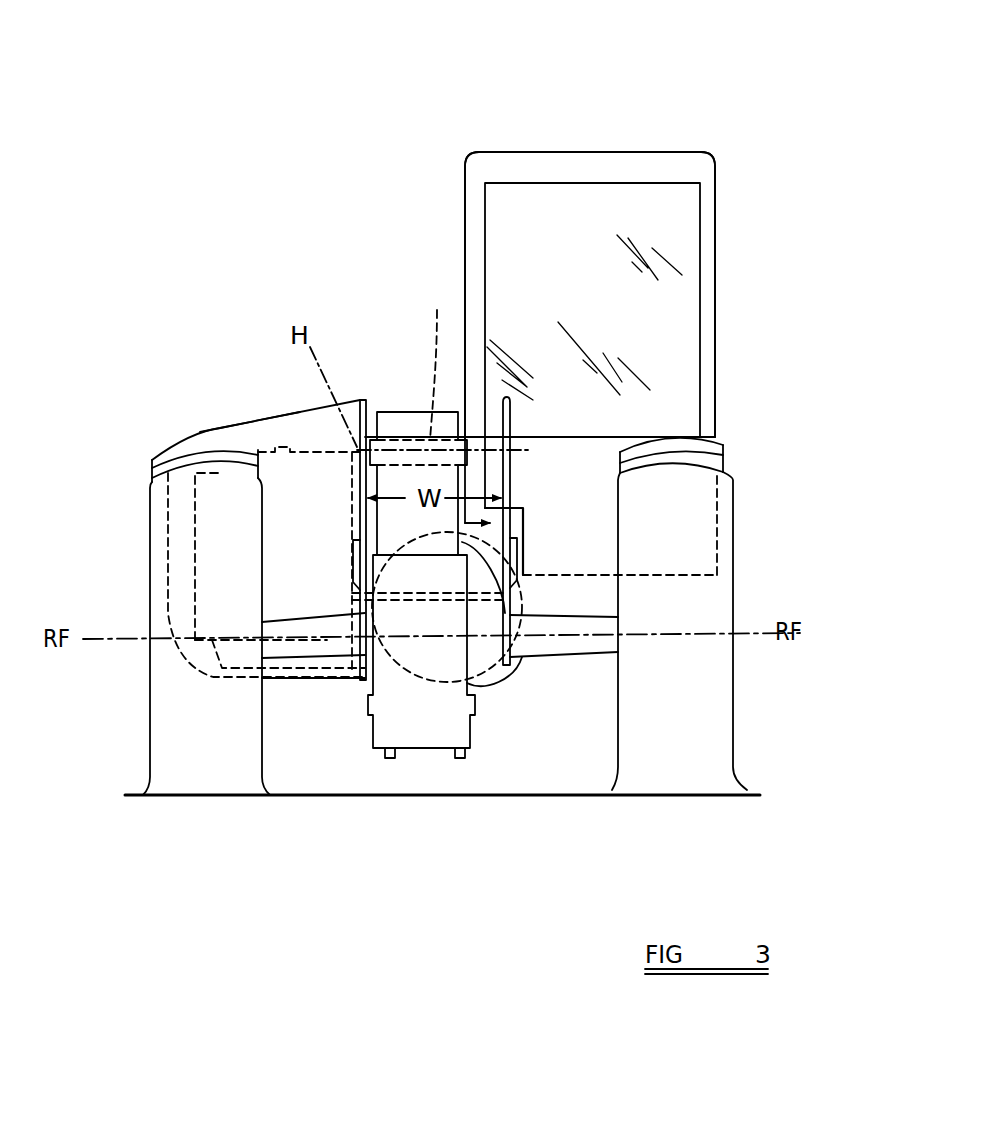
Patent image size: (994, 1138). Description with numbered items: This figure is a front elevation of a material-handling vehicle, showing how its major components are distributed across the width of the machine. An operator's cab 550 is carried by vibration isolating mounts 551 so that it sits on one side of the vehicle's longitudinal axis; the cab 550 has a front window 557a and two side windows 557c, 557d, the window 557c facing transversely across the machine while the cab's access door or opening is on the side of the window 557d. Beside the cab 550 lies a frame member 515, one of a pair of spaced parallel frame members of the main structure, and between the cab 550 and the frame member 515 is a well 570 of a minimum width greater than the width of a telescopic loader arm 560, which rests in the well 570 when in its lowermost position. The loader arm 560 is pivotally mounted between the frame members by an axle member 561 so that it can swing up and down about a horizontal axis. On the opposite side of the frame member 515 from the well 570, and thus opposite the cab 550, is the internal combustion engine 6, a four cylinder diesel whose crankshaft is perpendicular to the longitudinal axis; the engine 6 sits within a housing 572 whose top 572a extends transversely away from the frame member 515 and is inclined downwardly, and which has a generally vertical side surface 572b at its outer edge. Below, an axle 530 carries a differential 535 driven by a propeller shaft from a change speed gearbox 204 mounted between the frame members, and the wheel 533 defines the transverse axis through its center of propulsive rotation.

The operator's cab 550 is at (637, 143).
The side window 557c is at (465, 197).
The side window 557d is at (717, 178).
The front window 557a is at (683, 242).
The vibration isolating mounts 551 is at (490, 500).
The wheel 533 is at (150, 719).
The housing 572 is at (290, 414).
The top of housing 572a is at (232, 426).
The vertical side surface 572b is at (163, 525).
The internal combustion engine 6 is at (195, 565).
The frame member 515 is at (357, 400).
The loader arm 560 is at (420, 411).
The well 570 is at (393, 403).
The axle member 561 is at (439, 361).
The axle 530 is at (528, 657).
The differential 535 is at (483, 668).
The change speed gearbox 204 is at (510, 668).